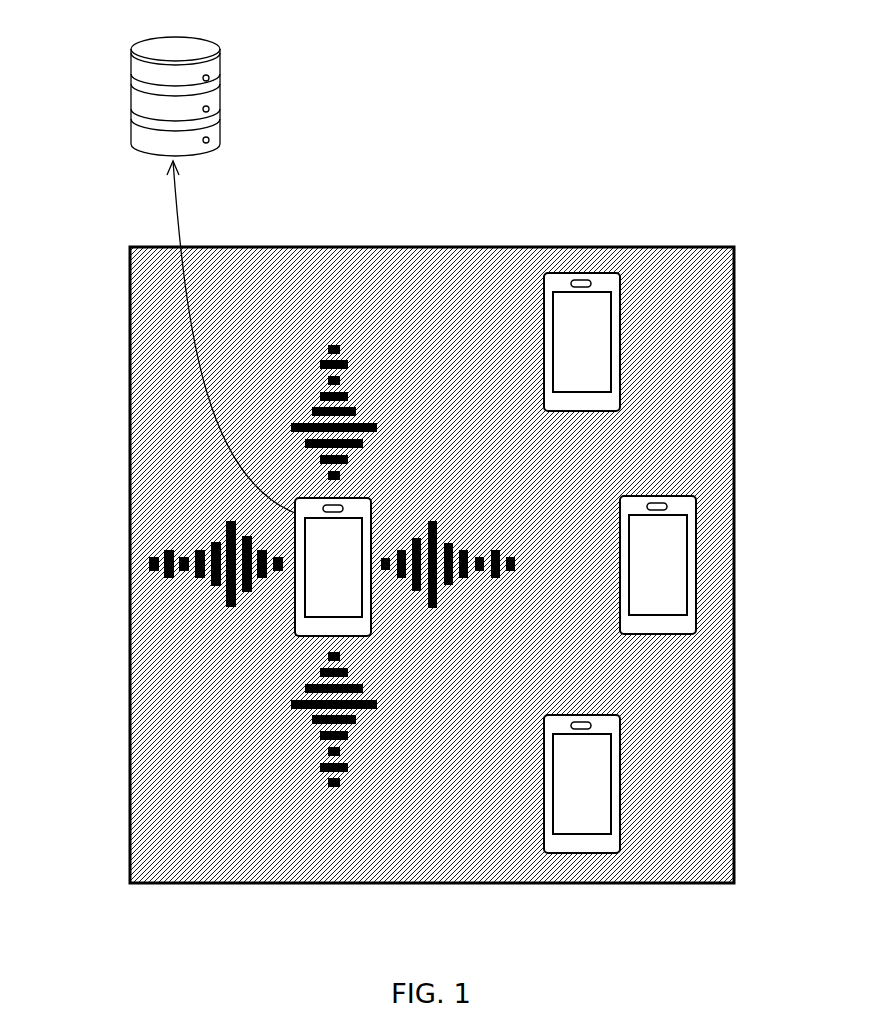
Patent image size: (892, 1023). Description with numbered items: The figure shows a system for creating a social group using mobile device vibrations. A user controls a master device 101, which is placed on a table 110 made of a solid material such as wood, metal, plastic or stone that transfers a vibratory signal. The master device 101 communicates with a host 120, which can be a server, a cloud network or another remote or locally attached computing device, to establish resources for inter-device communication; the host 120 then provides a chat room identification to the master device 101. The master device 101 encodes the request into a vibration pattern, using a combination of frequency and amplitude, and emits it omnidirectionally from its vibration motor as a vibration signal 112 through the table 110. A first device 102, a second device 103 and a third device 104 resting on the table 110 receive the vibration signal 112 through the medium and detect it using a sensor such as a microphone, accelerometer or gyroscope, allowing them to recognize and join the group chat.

The master device 101 is at (289, 606).
The first device 102 is at (676, 342).
The second device 103 is at (692, 538).
The third device 104 is at (615, 777).
The table 110 is at (672, 273).
The vibration signal 112 is at (325, 327).
The host 120 is at (205, 42).